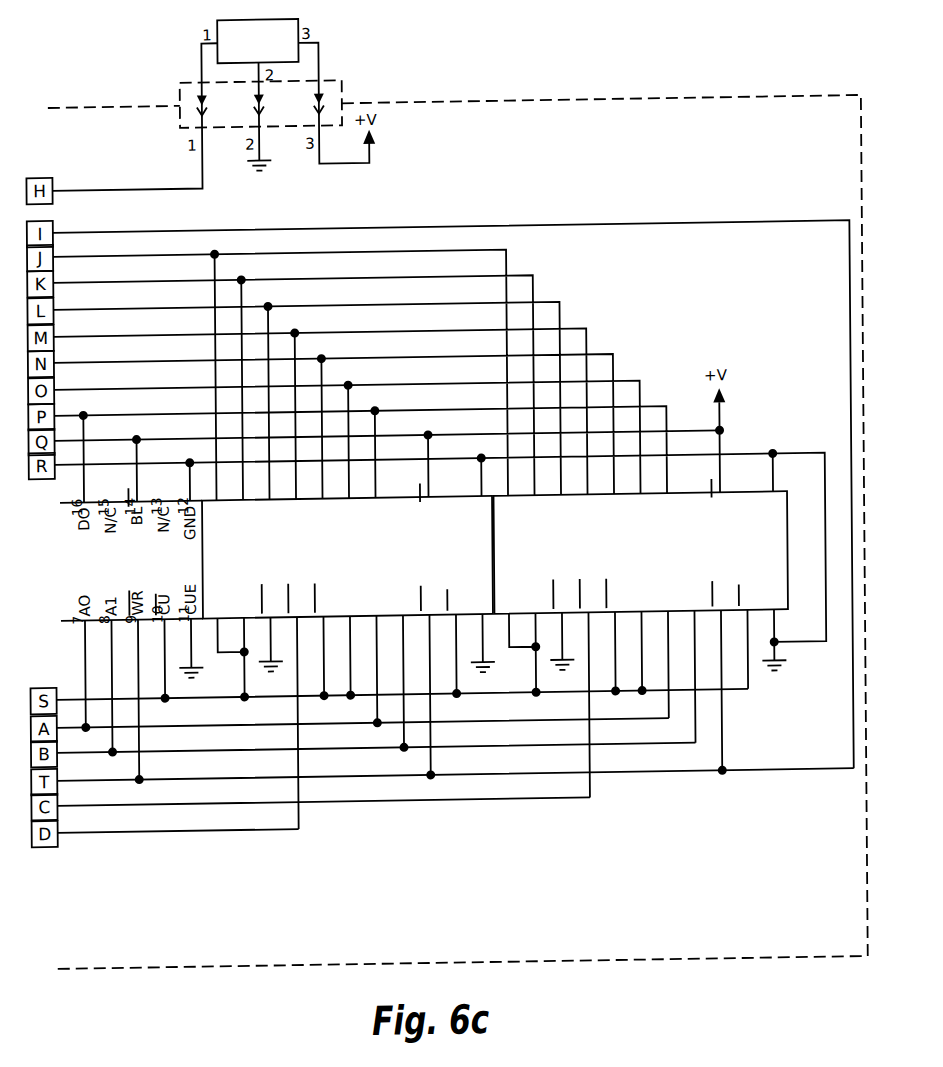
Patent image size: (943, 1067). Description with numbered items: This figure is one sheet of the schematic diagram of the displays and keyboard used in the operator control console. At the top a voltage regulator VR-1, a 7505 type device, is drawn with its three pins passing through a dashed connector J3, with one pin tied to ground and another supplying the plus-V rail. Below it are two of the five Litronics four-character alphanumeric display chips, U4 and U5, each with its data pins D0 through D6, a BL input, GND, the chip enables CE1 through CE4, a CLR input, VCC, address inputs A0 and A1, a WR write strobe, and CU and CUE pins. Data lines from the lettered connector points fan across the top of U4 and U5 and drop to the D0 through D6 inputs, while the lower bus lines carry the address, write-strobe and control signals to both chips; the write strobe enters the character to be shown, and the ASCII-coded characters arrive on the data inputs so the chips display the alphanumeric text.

The voltage regulator 7505 VR-1 is at (257, 41).
The connector J3 is at (244, 104).
The alphanumeric display chip U4 is at (347, 552).
The alphanumeric display chip U5 is at (640, 548).